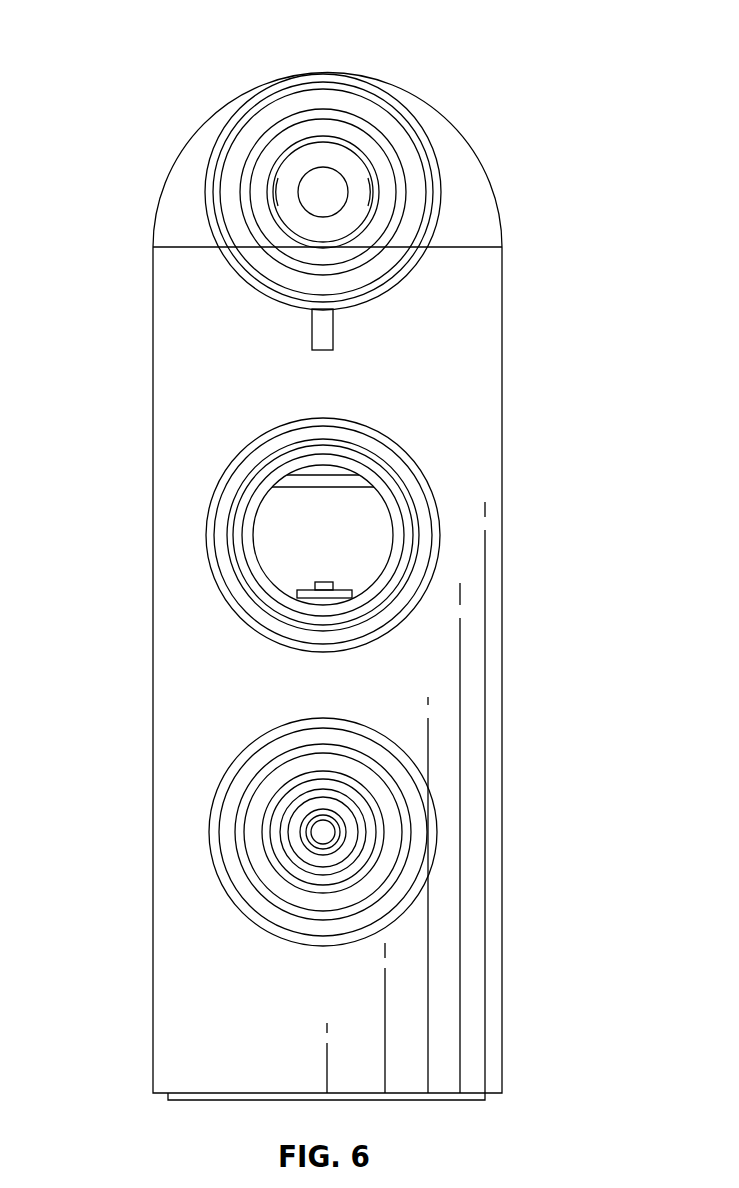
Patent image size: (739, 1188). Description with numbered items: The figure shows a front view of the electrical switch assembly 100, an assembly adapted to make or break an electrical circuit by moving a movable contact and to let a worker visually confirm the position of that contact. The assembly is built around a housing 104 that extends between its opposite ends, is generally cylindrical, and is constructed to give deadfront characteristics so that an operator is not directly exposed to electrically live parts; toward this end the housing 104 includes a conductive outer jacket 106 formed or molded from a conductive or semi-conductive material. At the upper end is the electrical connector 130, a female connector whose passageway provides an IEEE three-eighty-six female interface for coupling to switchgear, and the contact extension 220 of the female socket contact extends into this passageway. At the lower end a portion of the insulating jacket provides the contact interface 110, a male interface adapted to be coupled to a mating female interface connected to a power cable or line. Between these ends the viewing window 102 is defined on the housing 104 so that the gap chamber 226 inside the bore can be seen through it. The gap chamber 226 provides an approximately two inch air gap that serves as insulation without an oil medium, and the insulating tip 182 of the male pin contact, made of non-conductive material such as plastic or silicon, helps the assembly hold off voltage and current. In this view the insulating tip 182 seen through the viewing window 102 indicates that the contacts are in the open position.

The electrical switch assembly 100 is at (178, 62).
The viewing window 102 is at (350, 515).
The housing 104 is at (480, 277).
The conductive outer jacket 106 is at (185, 695).
The contact interface 110 is at (218, 852).
The electrical connector 130 is at (425, 212).
The insulating tip 182 is at (327, 580).
The contact extension 220 is at (358, 168).
The gap chamber 226 is at (288, 520).